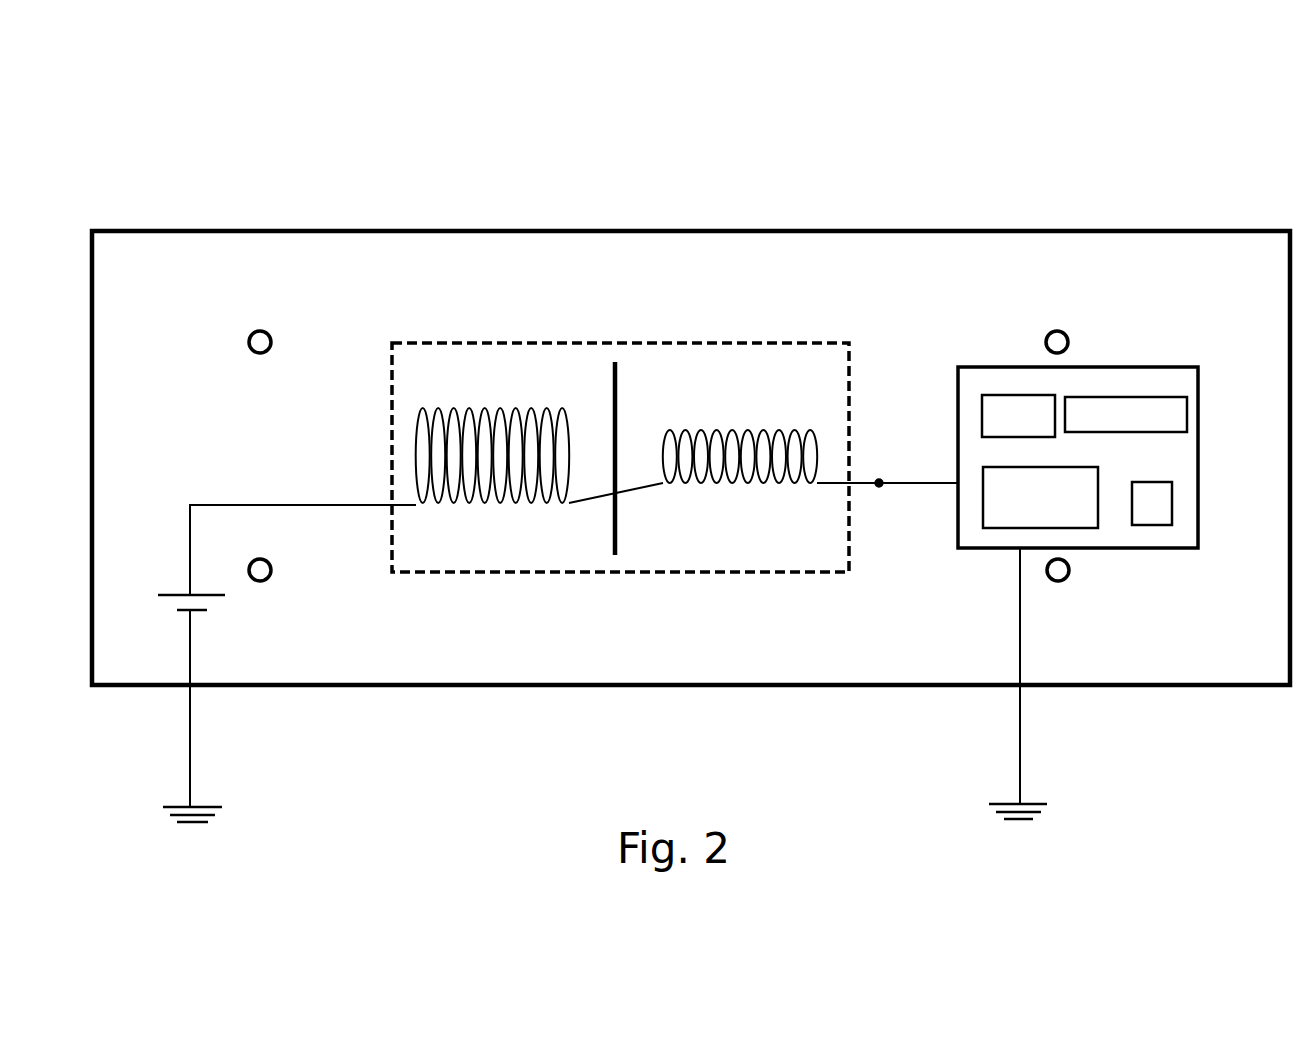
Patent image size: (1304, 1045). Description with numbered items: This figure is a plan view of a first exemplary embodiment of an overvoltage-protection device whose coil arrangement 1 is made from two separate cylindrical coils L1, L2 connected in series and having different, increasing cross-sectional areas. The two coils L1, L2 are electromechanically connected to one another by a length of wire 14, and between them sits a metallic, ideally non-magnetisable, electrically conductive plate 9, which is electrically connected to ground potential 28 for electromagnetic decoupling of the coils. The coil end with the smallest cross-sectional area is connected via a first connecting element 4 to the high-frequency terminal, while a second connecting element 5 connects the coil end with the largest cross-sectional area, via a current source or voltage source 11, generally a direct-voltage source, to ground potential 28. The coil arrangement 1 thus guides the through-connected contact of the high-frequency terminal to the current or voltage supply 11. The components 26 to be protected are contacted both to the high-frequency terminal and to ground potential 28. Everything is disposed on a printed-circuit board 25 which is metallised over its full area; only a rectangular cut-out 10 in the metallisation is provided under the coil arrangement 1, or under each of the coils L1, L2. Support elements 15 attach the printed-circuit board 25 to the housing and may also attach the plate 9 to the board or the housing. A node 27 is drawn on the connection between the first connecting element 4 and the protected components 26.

The coil arrangement 1 is at (668, 380).
The first connecting element 4 is at (836, 480).
The second connecting element 5 is at (414, 505).
The electrically conductive plate 9 is at (619, 512).
The rectangular cut-out 10 is at (603, 343).
The current source or voltage source 11 is at (165, 592).
The length of wire 14 is at (583, 506).
The support elements 15 is at (269, 580).
The printed-circuit board 25 is at (352, 385).
The components 26 is at (1029, 409).
The connection node 27 is at (880, 490).
The ground potential 28 is at (1010, 363).
The coil L1 is at (723, 428).
The coil L2 is at (531, 408).